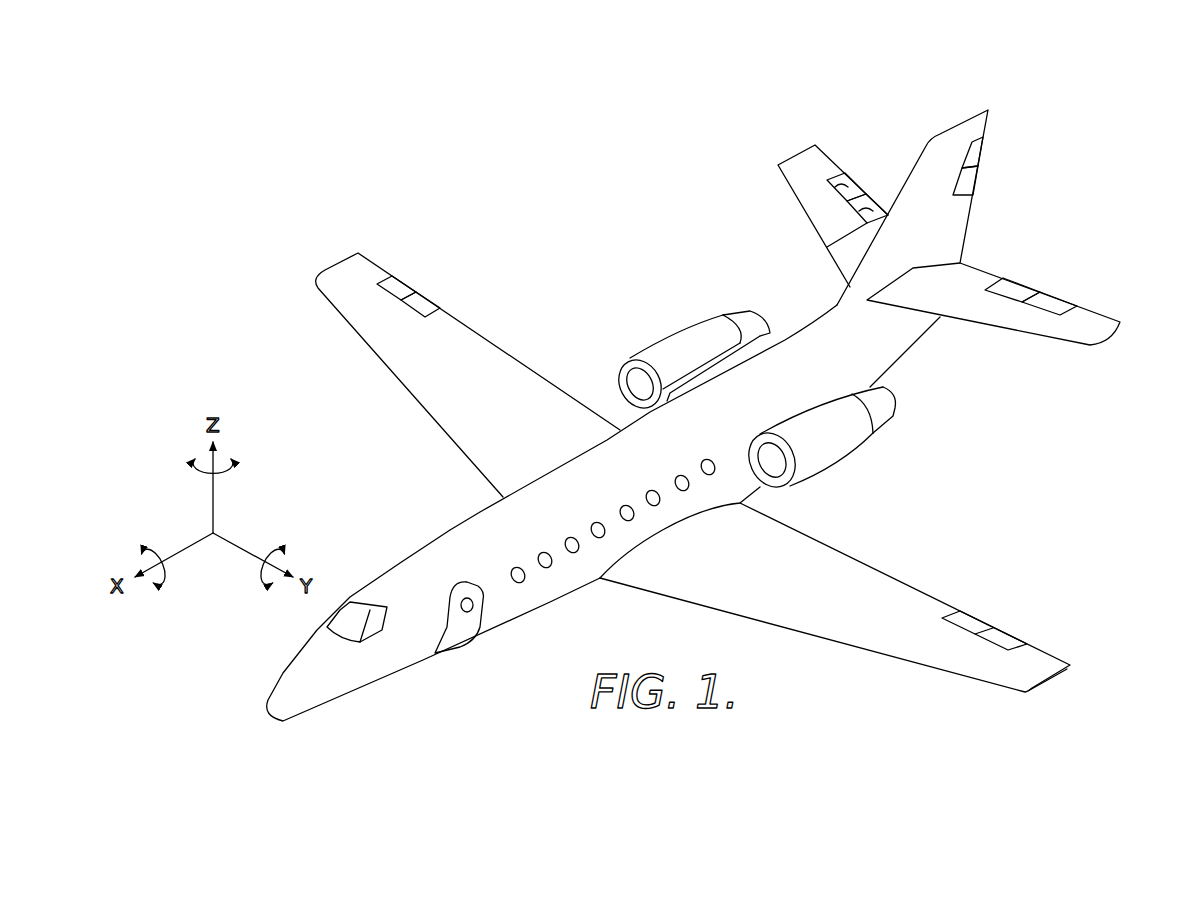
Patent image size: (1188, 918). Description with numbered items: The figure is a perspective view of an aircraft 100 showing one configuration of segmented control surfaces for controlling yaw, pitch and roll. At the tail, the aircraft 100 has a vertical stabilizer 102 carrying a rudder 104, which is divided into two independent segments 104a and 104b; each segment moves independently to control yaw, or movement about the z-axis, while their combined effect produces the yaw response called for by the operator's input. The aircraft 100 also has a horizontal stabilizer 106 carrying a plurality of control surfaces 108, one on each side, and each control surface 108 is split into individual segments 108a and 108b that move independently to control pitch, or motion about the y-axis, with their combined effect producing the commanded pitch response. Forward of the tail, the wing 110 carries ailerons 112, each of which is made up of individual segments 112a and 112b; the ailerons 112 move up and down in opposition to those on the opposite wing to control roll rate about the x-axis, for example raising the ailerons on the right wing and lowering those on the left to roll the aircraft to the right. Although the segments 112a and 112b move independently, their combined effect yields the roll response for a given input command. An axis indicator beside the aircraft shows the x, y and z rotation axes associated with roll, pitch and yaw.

The aircraft 100 is at (1090, 453).
The vertical stabilizer 102 is at (958, 133).
The rudder 104 is at (992, 161).
The rudder segment 104a is at (982, 148).
The rudder segment 104b is at (975, 190).
The horizontal stabilizer 106 is at (798, 160).
The control surface 108 is at (855, 152).
The control surface segment 108a is at (828, 183).
The control surface segment 108b is at (858, 220).
The wing 110 is at (340, 264).
The aileron 112 is at (393, 260).
The aileron segment 112a is at (402, 281).
The aileron segment 112b is at (432, 306).